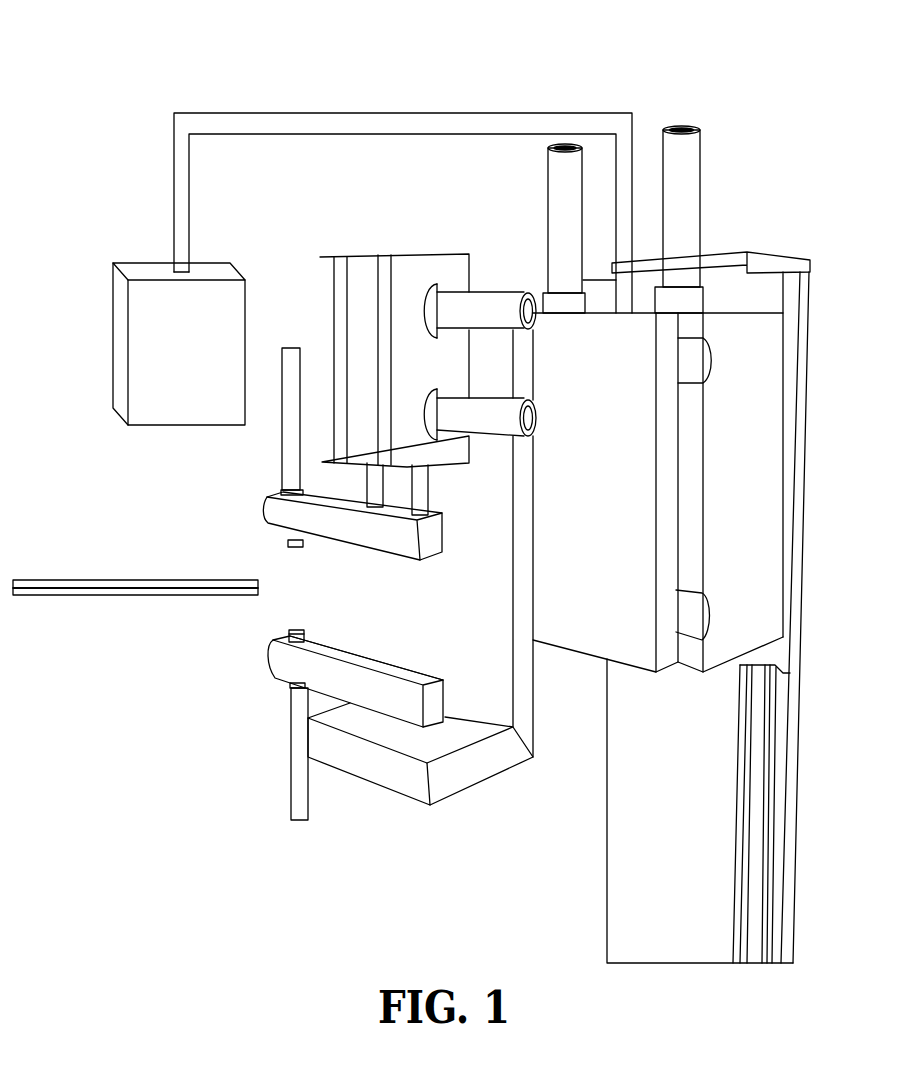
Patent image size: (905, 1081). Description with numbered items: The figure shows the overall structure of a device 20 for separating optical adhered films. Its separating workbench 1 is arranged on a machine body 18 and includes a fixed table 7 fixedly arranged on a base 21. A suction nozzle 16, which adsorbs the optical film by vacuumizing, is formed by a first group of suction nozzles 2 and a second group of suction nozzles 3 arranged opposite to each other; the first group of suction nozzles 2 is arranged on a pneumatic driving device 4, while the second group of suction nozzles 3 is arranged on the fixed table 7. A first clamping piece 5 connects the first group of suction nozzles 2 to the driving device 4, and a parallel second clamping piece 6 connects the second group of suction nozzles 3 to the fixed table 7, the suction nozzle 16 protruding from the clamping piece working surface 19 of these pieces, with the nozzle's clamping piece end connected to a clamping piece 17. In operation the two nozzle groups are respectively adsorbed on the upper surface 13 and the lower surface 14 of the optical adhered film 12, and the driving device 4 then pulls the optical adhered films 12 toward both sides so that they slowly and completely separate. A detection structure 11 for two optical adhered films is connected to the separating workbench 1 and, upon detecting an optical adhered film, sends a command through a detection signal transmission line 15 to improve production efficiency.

The separating workbench 1 is at (490, 503).
The first group of suction nozzles 2 is at (290, 545).
The second group of suction nozzles 3 is at (283, 658).
The driving device 4 is at (423, 285).
The first clamping piece 5 is at (432, 535).
The second clamping piece 6 is at (390, 702).
The fixed table 7 is at (355, 763).
The detection structure for two optical adhered films 11 is at (168, 305).
The optical adhered film 12 is at (152, 588).
The upper surface 13 is at (53, 578).
The lower surface 14 is at (53, 595).
The detection signal transmission line 15 is at (353, 123).
The suction nozzle 16 is at (223, 613).
The clamping piece 17 is at (396, 727).
The machine body 18 is at (687, 753).
The clamping piece working surface 19 is at (372, 672).
The device for separating optical adhered films 20 is at (738, 250).
The base 21 is at (622, 628).